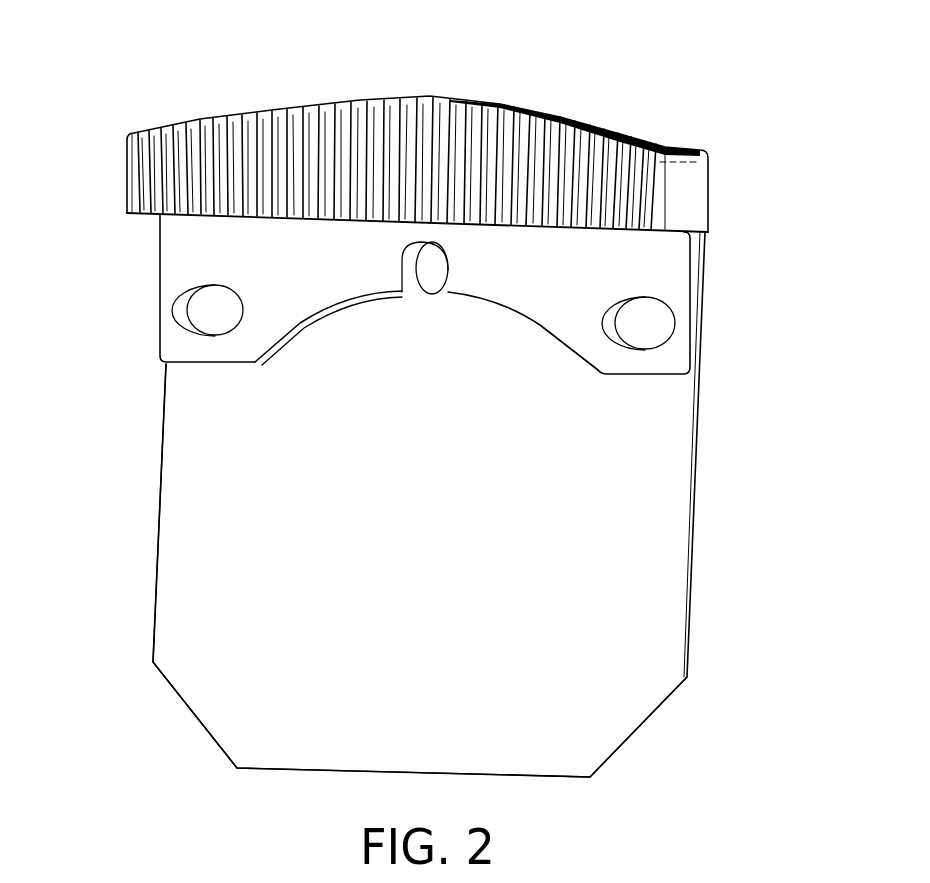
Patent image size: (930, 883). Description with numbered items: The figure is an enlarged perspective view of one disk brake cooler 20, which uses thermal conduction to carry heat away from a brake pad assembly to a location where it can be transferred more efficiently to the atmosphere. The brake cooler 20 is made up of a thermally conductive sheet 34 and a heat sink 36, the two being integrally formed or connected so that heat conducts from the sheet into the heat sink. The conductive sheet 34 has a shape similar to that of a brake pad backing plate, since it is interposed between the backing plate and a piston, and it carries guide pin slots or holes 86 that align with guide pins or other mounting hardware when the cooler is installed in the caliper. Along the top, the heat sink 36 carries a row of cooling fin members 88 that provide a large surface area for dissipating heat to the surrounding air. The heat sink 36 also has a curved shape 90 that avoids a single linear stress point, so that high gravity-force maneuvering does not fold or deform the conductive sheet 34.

The disk brake cooler 20 is at (720, 296).
The thermally conductive sheet 34 is at (365, 537).
The heat sink 36 is at (340, 162).
The guide pin slots or holes 86 is at (178, 313).
The cooling fin members 88 is at (449, 97).
The curved shape 90 is at (288, 338).